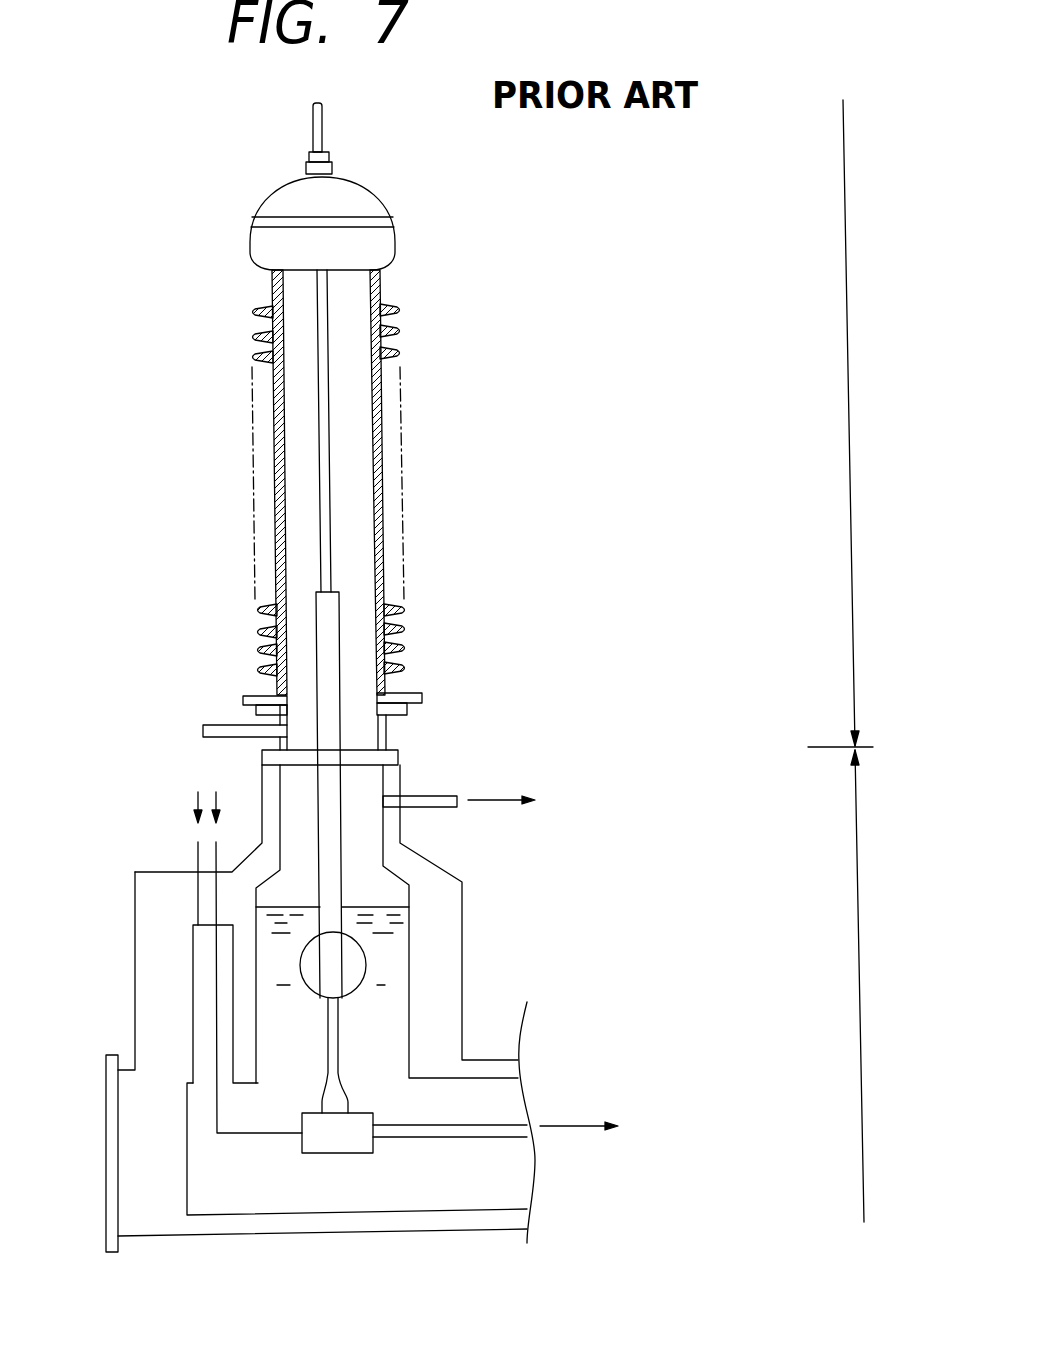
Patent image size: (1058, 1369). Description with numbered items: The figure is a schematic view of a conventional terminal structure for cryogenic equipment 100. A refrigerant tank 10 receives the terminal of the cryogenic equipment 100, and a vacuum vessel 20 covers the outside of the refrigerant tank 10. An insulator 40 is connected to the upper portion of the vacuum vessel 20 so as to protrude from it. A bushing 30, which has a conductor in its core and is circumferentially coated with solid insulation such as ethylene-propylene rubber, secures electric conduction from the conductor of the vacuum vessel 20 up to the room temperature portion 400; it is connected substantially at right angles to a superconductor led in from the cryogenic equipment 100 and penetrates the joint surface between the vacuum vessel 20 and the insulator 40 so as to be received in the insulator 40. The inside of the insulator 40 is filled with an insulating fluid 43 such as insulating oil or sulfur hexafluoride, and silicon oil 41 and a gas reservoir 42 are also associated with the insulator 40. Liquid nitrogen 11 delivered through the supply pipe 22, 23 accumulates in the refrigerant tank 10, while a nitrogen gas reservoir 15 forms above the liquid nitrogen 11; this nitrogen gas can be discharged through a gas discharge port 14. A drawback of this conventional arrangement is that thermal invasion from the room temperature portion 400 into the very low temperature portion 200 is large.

The refrigerant tank 10 is at (187, 1157).
The liquid nitrogen 11 is at (275, 1183).
The gas discharge port 14 is at (443, 790).
The nitrogen gas reservoir 15 is at (390, 887).
The vacuum vessel 20 is at (447, 947).
The supply pipe 22 is at (197, 857).
The supply pipe 23 is at (217, 965).
The bushing 30 is at (333, 795).
The insulator 40 is at (388, 306).
The silicon oil 41 is at (458, 1140).
The gas reservoir 42 is at (358, 246).
The insulating fluid 43 is at (297, 455).
The cryogenic equipment 100 is at (689, 1128).
The very low temperature portion 200 is at (860, 985).
The room temperature portion 400 is at (848, 410).